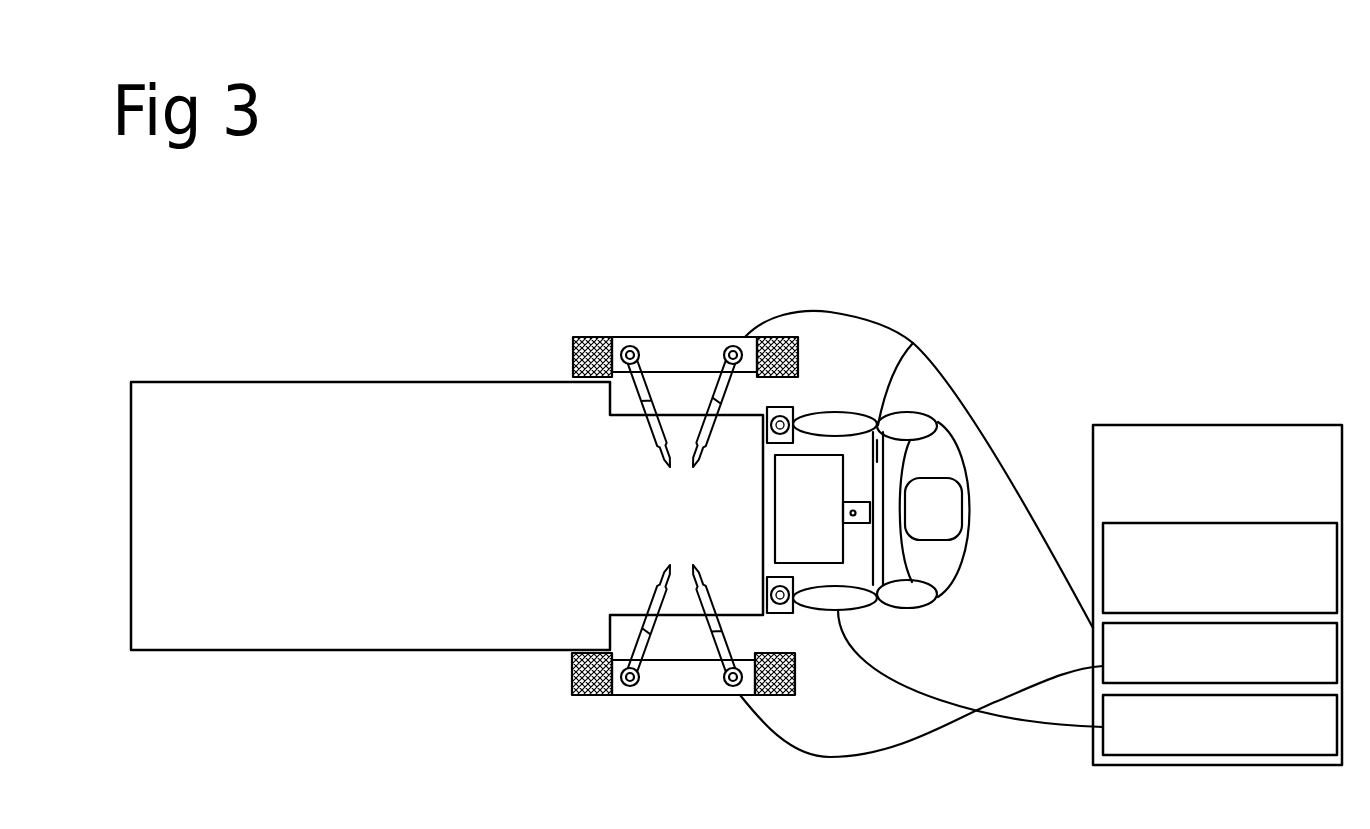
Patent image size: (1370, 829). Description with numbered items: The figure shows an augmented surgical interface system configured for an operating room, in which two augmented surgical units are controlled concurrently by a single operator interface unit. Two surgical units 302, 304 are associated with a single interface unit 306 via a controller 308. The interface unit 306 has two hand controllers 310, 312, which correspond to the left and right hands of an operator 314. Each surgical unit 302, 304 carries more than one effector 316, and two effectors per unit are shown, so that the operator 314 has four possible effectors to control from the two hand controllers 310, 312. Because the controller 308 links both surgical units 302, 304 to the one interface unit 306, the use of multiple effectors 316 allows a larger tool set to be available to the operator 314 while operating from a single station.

The surgical unit 302 is at (712, 337).
The surgical unit 304 is at (687, 697).
The interface unit 306 is at (913, 343).
The controller 308 is at (1243, 424).
The hand controller 310 is at (790, 407).
The hand controller 312 is at (797, 612).
The operator 314 is at (950, 563).
The effector 316 is at (658, 377).